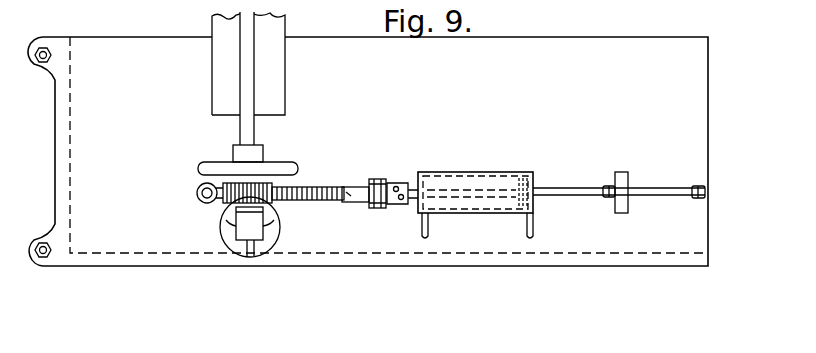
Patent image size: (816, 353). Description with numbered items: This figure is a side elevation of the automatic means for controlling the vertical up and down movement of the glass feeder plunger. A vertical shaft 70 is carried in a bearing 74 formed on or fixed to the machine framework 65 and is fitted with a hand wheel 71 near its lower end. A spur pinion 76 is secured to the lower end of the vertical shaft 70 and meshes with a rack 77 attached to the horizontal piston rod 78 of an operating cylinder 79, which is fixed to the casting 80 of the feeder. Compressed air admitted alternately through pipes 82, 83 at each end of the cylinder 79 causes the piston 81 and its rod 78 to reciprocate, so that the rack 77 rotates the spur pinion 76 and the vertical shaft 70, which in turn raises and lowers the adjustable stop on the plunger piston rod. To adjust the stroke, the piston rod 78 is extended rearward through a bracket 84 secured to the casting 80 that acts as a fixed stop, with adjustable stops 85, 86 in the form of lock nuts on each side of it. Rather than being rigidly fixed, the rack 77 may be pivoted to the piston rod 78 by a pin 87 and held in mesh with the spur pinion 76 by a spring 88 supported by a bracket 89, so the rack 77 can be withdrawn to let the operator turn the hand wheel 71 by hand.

The machine framework 65 is at (285, 25).
The vertical shaft 70 is at (240, 62).
The hand wheel 71 is at (202, 164).
The bearing 74 is at (235, 250).
The spur pinion 76 is at (225, 205).
The rack 77 is at (317, 186).
The horizontal piston rod 78 is at (562, 188).
The operating cylinder 79 is at (502, 172).
The casting of the feeder 80 is at (55, 152).
The piston 81 is at (517, 195).
The pipe 82 is at (428, 233).
The pipe 83 is at (533, 233).
The bracket 84 is at (628, 172).
The adjustable stop 85 is at (609, 197).
The adjustable stop 86 is at (705, 195).
The pin 87 is at (380, 179).
The spring 88 is at (344, 201).
The bracket 89 is at (362, 195).